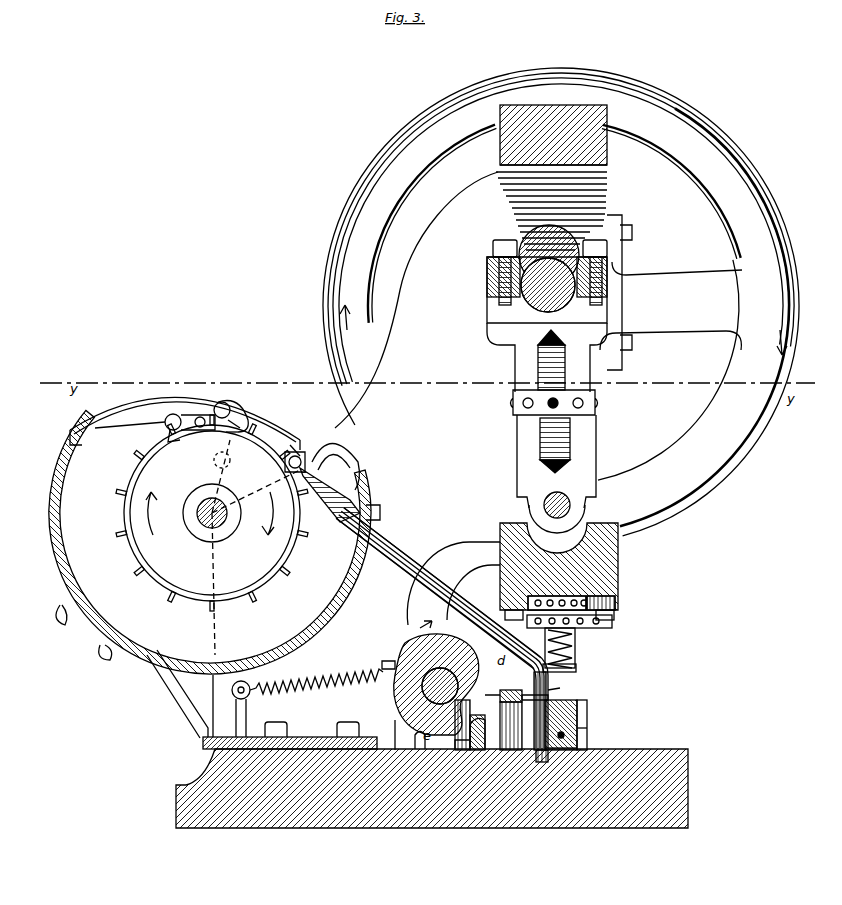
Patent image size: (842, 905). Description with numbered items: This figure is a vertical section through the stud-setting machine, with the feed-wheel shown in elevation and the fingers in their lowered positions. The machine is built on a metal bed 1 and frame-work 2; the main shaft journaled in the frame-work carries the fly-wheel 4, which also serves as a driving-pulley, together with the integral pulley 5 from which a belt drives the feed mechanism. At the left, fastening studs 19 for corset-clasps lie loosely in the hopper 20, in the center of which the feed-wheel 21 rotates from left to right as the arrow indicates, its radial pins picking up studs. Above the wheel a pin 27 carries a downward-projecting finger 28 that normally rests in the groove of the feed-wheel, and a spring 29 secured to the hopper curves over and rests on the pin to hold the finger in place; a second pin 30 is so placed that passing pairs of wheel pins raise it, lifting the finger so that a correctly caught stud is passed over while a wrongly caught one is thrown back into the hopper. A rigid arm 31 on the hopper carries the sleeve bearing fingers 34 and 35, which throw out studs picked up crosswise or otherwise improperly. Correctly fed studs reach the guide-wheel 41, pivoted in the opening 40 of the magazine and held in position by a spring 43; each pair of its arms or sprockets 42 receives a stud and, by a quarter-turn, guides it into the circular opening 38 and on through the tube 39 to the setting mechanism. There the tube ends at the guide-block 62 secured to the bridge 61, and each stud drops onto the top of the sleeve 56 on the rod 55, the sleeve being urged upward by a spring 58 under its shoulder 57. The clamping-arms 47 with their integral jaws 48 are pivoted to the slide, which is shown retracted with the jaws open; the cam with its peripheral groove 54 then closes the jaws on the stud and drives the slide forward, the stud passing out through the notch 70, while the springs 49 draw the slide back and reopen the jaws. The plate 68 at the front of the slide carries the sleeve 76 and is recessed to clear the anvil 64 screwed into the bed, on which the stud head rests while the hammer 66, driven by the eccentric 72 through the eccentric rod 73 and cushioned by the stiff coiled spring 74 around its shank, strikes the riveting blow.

The bed 1 is at (690, 812).
The frame-work 2 is at (471, 266).
The fly-wheel 4 is at (766, 336).
The pulley 5 is at (619, 292).
The fastening studs 19 is at (165, 445).
The hopper 20 is at (214, 542).
The feed-wheel 21 is at (212, 540).
The pin 27 is at (174, 414).
The finger 28 is at (166, 434).
The spring 29 is at (185, 423).
The pin 30 is at (202, 416).
The rigid arm 31 is at (231, 408).
The finger 34 is at (240, 432).
The finger 35 is at (240, 424).
The circular opening 38 is at (322, 487).
The tube 39 is at (438, 588).
The opening 40 is at (510, 722).
The guide-wheel 41 is at (318, 452).
The arms or sprockets 42 is at (334, 460).
The spring 43 is at (298, 440).
The clamping-arms 47 is at (395, 660).
The jaws 48 is at (562, 688).
The springs 49 is at (296, 693).
The groove 54 is at (500, 722).
The rod 55 is at (529, 757).
The sleeve 56 is at (578, 750).
The shoulder 57 is at (589, 727).
The spring 58 is at (565, 738).
The cross-piece or bridge 61 is at (505, 686).
The guide-block 62 is at (548, 682).
The anvil 64 is at (570, 716).
The hammer 66 is at (570, 663).
The plate 68 is at (588, 708).
The notch 70 is at (550, 697).
The eccentric 72 is at (549, 268).
The eccentric rod 73 is at (547, 386).
The coiled spring 74 is at (568, 643).
The sleeve 76 is at (482, 725).